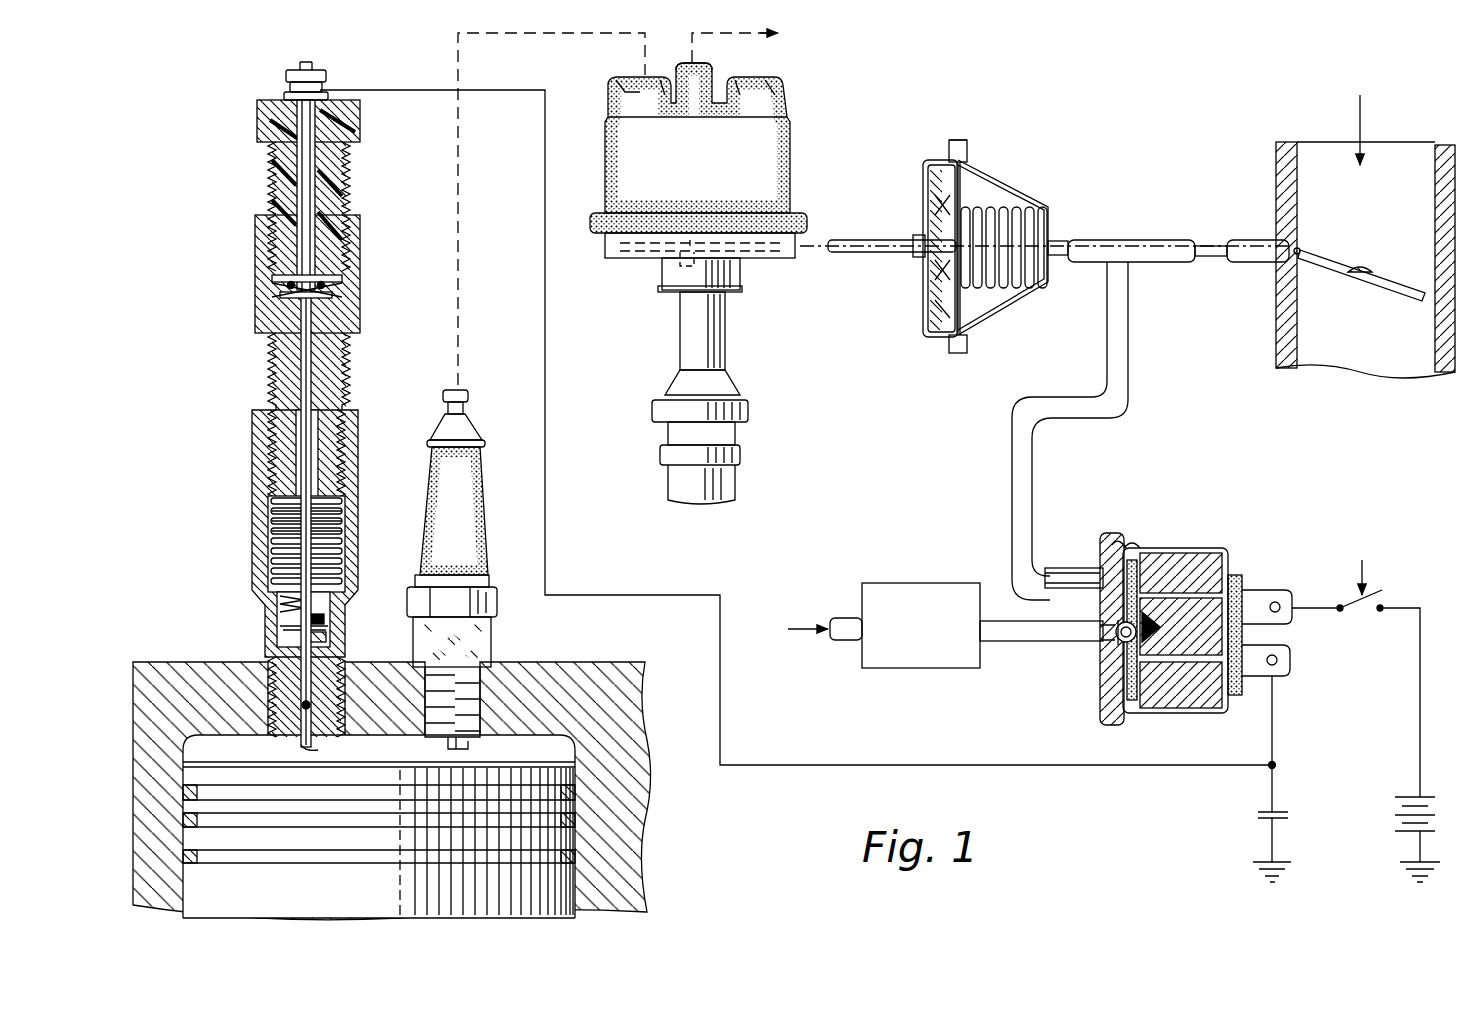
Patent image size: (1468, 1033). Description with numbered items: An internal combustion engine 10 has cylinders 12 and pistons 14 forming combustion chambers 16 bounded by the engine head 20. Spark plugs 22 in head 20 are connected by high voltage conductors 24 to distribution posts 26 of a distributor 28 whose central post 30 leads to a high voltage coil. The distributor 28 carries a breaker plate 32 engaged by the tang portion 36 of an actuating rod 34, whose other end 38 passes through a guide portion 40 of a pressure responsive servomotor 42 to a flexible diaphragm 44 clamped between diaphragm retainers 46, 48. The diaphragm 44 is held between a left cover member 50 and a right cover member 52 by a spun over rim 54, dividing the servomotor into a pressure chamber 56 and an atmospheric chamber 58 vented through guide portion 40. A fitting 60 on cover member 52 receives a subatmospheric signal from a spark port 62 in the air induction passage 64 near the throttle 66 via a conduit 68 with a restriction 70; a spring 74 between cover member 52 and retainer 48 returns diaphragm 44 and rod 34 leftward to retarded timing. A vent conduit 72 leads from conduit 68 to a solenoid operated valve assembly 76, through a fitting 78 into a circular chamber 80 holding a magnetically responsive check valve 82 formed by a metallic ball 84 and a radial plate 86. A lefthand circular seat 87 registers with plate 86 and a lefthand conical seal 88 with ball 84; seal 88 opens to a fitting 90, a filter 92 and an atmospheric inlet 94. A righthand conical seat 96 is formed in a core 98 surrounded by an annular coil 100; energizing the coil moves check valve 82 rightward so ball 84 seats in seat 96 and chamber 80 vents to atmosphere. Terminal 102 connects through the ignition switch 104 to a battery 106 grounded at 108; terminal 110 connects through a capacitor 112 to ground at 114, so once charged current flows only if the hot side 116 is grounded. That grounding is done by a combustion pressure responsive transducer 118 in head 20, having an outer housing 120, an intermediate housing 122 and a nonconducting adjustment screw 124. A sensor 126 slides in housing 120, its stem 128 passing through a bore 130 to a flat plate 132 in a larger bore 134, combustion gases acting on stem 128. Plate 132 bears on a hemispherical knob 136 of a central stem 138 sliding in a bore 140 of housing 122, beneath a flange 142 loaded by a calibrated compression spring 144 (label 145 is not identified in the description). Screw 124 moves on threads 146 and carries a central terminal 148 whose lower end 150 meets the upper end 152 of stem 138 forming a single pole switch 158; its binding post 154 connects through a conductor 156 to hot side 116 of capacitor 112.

The internal combustion engine 10 is at (648, 812).
The cylinders 12 is at (570, 884).
The pistons 14 is at (575, 782).
The combustion chambers 16 is at (560, 757).
The engine head 20 is at (575, 662).
The spark plugs 22 is at (486, 648).
The high voltage conductors 24 is at (458, 250).
The distribution posts 26 is at (630, 96).
The distributor 28 is at (762, 165).
The central post 30 is at (692, 62).
The breaker plate 32 is at (770, 258).
The actuating rod 34 is at (834, 240).
The tang portion 36 is at (690, 272).
The other end of rod 38 is at (922, 245).
The guide portion 40 is at (915, 257).
The pressure responsive servomotor 42 is at (983, 226).
The flexible circular diaphragm 44 is at (946, 325).
The diaphragm retainer 46 is at (944, 216).
The diaphragm retainer 48 is at (962, 192).
The left cover member 50 is at (945, 165).
The right cover member 52 is at (1046, 206).
The spun over rim 54 is at (960, 150).
The pressure chamber 56 is at (998, 190).
The atmospheric chamber 58 is at (935, 172).
The fitting 60 is at (1056, 240).
The spark port 62 is at (1297, 250).
The air induction passage 64 is at (1432, 365).
The throttle 66 is at (1348, 270).
The conduit 68 is at (1175, 240).
The restriction 70 is at (1213, 246).
The vent conduit 72 is at (1130, 358).
The spring 74 is at (1012, 222).
The solenoid operated valve assembly 76 is at (1177, 606).
The fitting 78 is at (1085, 572).
The circular chamber 80 is at (1125, 688).
The magnetically responsive check valve 82 is at (1120, 652).
The central metallic ball 84 is at (1115, 645).
The radially extending plate 86 is at (1137, 566).
The lefthand circular seat 87 is at (1138, 546).
The lefthand conical seal 88 is at (1115, 636).
The fitting 90 is at (1020, 642).
The filter 92 is at (905, 583).
The atmospheric inlet 94 is at (845, 620).
The righthand conical seat 96 is at (1215, 628).
The core 98 is at (1225, 632).
The annular coil 100 is at (1222, 570).
The terminal 102 is at (1266, 605).
The ignition switch 104 is at (1382, 598).
The electrical source 106 is at (1408, 797).
The ground 108 is at (1405, 866).
The other terminal 110 is at (1285, 662).
The capacitor 112 is at (1280, 814).
The ground 114 is at (1284, 865).
The hot side of capacitor 116 is at (1274, 764).
The combustion pressure responsive transducer 118 is at (294, 418).
The outer housing 120 is at (340, 590).
The intermediate housing 122 is at (330, 380).
The nonconducting adjustment screw 124 is at (350, 190).
The axially slidable sensor 126 is at (292, 690).
The stem 128 is at (318, 750).
The bore 130 is at (311, 705).
The flat plate 132 is at (326, 640).
The larger bore 134 is at (282, 605).
The hemispherical knob 136 is at (292, 628).
The central stem 138 is at (298, 427).
The bore 140 is at (303, 350).
The flange 142 is at (325, 618).
The calibrated compression spring 144 is at (275, 553).
The spring coil 145 is at (338, 520).
The threads 146 is at (345, 250).
The central terminal 148 is at (302, 170).
The lower end 150 is at (332, 285).
The upper end 152 is at (306, 290).
The binding post 154 is at (286, 88).
The conductor 156 is at (545, 440).
The single pole switch 158 is at (282, 285).